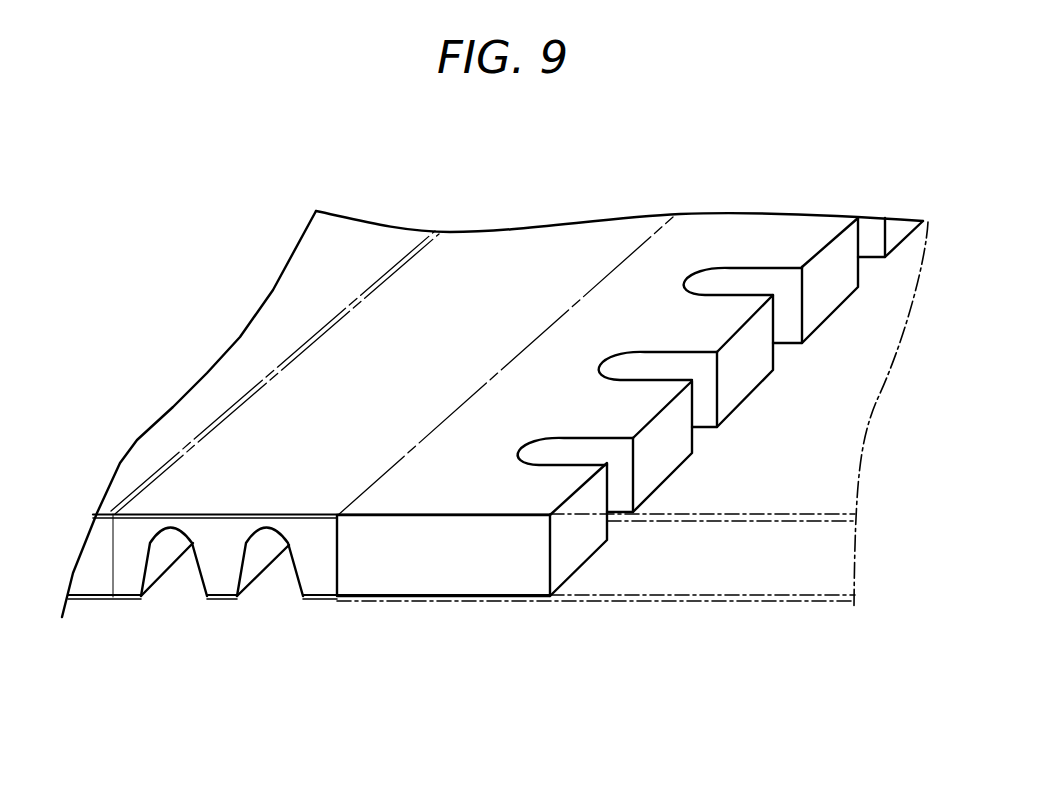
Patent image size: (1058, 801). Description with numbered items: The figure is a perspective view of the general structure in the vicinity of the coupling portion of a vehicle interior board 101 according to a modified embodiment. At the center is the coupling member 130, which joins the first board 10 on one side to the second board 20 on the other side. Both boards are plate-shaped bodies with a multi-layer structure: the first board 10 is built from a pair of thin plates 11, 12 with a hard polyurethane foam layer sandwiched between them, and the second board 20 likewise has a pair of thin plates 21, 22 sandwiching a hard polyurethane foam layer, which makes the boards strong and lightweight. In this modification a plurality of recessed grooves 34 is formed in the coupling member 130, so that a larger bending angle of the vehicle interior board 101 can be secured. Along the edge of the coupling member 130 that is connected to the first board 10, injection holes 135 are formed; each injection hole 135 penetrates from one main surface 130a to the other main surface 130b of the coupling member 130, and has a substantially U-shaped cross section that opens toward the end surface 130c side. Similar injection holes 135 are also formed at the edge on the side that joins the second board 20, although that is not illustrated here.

The vehicle interior board 101 is at (708, 163).
The coupling member 130 is at (498, 197).
The one main surface 130a is at (280, 473).
The other main surface 130b is at (352, 555).
The end surface 130c is at (663, 447).
The injection hole 135 is at (628, 356).
The second board 20 is at (222, 278).
The thin plate 21 is at (151, 450).
The thin plate 22 is at (91, 603).
The recessed groove 34 is at (177, 573).
The first board 10 is at (797, 610).
The thin plate 11 is at (811, 513).
The thin plate 12 is at (702, 602).